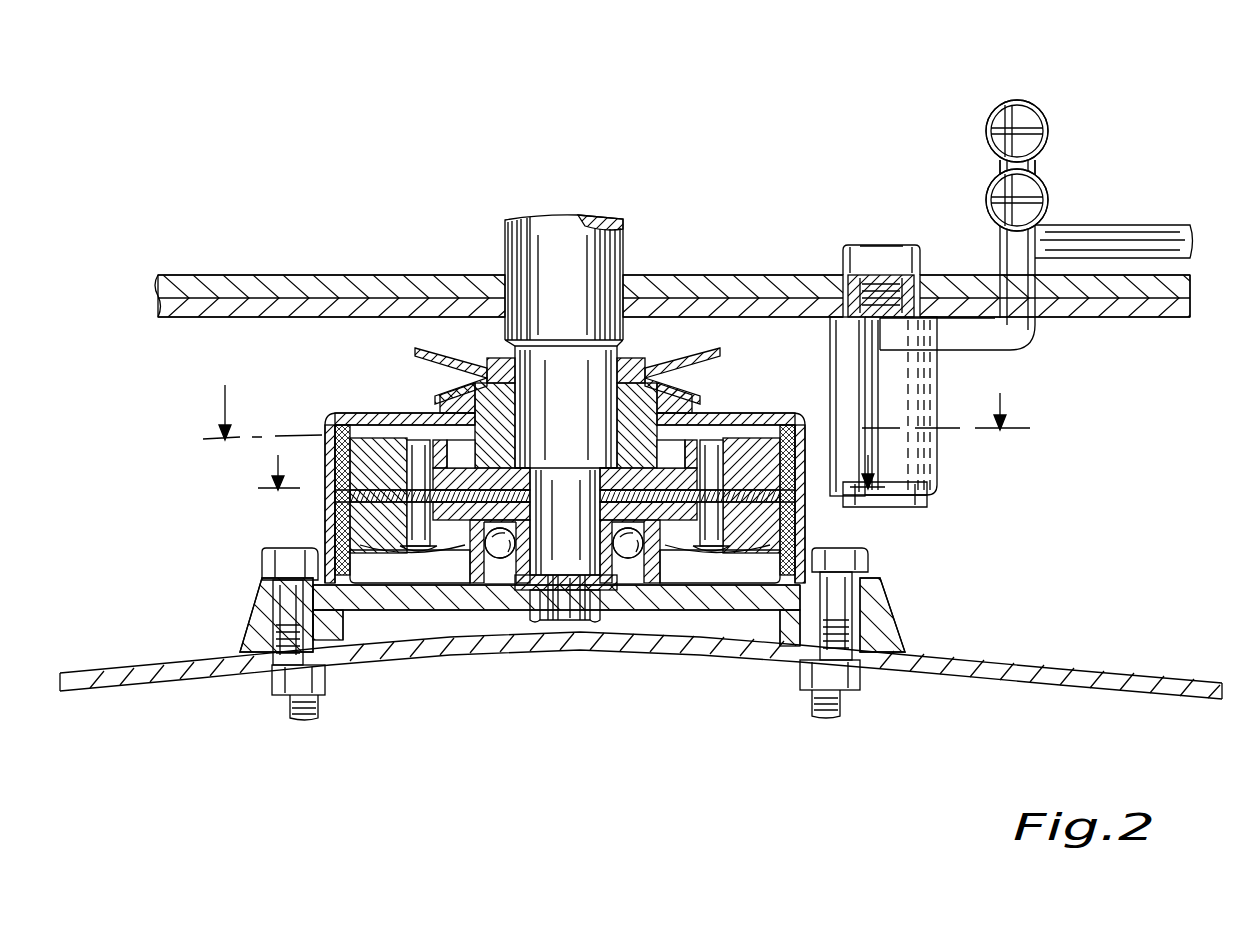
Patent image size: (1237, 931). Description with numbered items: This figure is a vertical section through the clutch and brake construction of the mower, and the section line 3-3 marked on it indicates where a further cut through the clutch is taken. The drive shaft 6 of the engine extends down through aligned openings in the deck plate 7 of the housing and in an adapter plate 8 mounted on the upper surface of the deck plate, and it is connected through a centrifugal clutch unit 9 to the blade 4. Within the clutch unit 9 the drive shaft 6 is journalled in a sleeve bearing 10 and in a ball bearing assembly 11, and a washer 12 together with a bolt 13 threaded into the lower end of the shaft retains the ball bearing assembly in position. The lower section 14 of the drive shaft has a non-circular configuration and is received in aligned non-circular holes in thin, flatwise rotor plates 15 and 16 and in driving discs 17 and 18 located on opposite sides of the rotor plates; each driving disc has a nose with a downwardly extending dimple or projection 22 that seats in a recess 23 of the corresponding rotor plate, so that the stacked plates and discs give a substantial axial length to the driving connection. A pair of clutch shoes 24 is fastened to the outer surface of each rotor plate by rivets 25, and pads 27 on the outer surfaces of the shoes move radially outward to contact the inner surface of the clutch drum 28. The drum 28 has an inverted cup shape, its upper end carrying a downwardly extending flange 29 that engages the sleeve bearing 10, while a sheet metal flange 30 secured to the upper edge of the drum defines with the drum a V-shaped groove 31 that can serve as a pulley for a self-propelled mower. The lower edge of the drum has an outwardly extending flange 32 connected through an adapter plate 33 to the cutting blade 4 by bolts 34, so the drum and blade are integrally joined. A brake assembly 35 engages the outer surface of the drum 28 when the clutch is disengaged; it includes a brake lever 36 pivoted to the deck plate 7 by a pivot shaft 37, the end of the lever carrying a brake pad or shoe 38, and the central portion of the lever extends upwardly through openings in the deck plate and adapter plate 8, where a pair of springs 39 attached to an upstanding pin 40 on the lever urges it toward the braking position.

The section line 3- 3 is at (571, 458).
The blade 4 is at (103, 670).
The drive shaft 6 is at (590, 222).
The deck plate 7 is at (205, 313).
The adapter plate 8 is at (705, 275).
The clutch unit 9 is at (705, 470).
The sleeve bearing 10 is at (510, 358).
The ball bearing assembly 11 is at (503, 558).
The washer 12 is at (518, 590).
The bolt 13 is at (585, 615).
The lower section 14 is at (565, 560).
The rotor plate 15 is at (677, 454).
The rotor plate 16 is at (430, 560).
The driving disc 17 is at (454, 454).
The driving disc 18 is at (675, 560).
The dimple or projection 22 is at (480, 494).
The recess 23 is at (495, 470).
The clutch shoe 24 is at (380, 438).
The rivet 25 is at (413, 465).
The pad 27 is at (326, 415).
The clutch drum 28 is at (325, 478).
The flange 29 is at (478, 410).
The sheet metal flange 30 is at (418, 351).
The V-shaped groove 31 is at (440, 396).
The flange 32 is at (262, 562).
The adapter plate 33 is at (240, 628).
The bolt 34 is at (290, 600).
The brake assembly 35 is at (937, 392).
The brake lever 36 is at (985, 355).
The pivot shaft 37 is at (845, 365).
The brake pad or shoe 38 is at (840, 502).
The spring 39 is at (1043, 115).
The upstanding pin 40 is at (1000, 165).